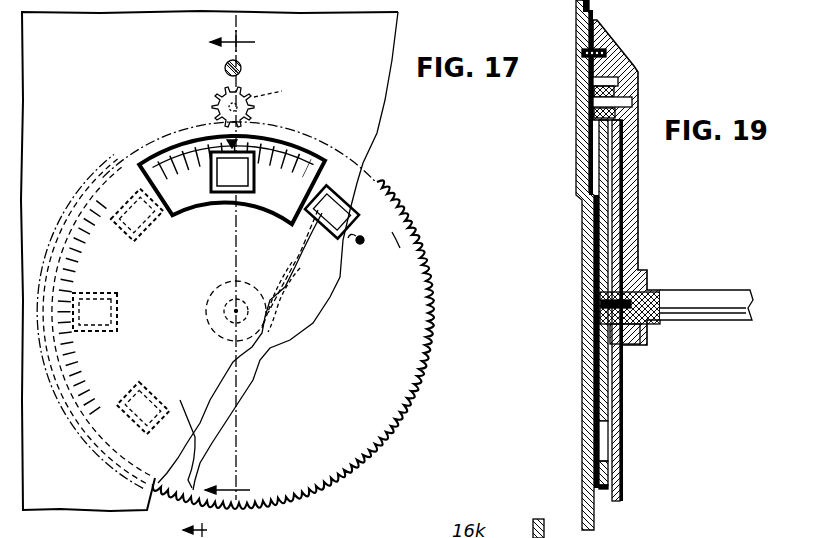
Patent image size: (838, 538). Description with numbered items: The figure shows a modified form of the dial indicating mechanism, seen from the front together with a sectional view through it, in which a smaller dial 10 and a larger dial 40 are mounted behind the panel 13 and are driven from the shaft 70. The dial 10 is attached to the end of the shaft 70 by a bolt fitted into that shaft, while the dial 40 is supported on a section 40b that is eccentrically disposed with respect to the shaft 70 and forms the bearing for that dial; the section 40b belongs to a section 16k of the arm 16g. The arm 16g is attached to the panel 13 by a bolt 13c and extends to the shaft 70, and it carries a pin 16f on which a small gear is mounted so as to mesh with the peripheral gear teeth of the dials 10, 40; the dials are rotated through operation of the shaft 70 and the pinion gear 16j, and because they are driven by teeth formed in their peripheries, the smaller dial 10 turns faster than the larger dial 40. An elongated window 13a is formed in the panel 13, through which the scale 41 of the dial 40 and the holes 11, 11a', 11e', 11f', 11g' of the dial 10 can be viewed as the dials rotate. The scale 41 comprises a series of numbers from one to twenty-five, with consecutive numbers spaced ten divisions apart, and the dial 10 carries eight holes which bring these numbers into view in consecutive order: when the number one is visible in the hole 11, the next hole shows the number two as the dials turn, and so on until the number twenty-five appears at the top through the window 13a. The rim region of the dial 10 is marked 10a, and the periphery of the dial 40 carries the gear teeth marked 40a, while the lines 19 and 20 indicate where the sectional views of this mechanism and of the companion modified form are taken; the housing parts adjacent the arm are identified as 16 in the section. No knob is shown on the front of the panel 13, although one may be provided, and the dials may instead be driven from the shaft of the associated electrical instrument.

In FIG. 17, the dial 10 is at (225, 388).
In FIG. 19, the dial 10 is at (602, 391).
In FIG. 17, the disc edge 10a is at (180, 433).
In FIG. 19, the disc edge 10a is at (592, 140).
In FIG. 17, the hole 11 is at (230, 188).
In FIG. 19, the hole 11 is at (594, 170).
In FIG. 17, the hole 11a' is at (367, 193).
In FIG. 17, the hole 11e' is at (107, 437).
In FIG. 17, the hole 11f' is at (73, 271).
In FIG. 17, the hole 11g' is at (114, 195).
In FIG. 17, the panel 13 is at (383, 110).
In FIG. 19, the panel 13 is at (580, 280).
In FIG. 17, the elongated window 13a is at (223, 68).
In FIG. 19, the elongated window 13a is at (587, 194).
In FIG. 19, the bolt 13c is at (582, 52).
In FIG. 19, the housing 16 is at (592, 536).
In FIG. 17, the pin 16f is at (214, 101).
In FIG. 19, the pin 16f is at (624, 96).
In FIG. 19, the arm 16g is at (640, 232).
In FIG. 17, the pinion gear 16j is at (282, 98).
In FIG. 19, the pinion gear 16j is at (581, 97).
In FIG. 17, the section of the arm 16k is at (272, 312).
In FIG. 19, the section of the arm 16k is at (647, 340).
In FIG. 17, the section line 19 is at (243, 259).
In FIG. 17, the section line 20 is at (209, 529).
In FIG. 19, the dial 40 is at (625, 437).
In FIG. 17, the gear teeth 40a is at (433, 281).
In FIG. 19, the gear teeth 40a is at (635, 118).
In FIG. 17, the section 40b is at (272, 346).
In FIG. 19, the section 40b is at (583, 343).
In FIG. 17, the scale 41 is at (407, 247).
In FIG. 17, the shaft 70 is at (205, 311).
In FIG. 19, the shaft 70 is at (684, 295).